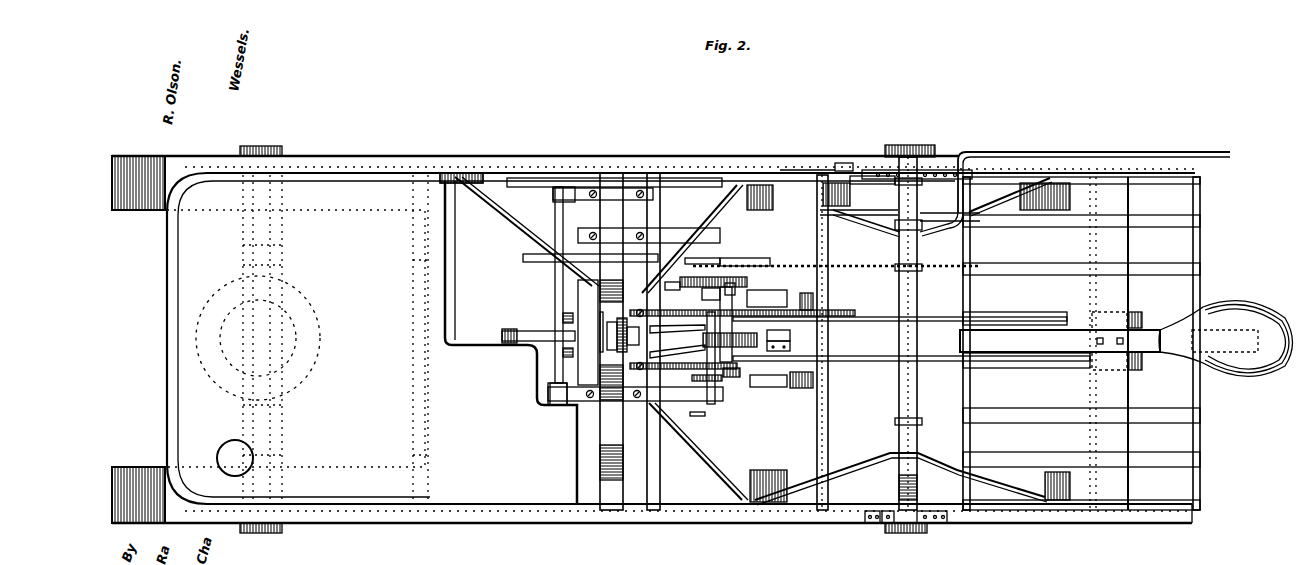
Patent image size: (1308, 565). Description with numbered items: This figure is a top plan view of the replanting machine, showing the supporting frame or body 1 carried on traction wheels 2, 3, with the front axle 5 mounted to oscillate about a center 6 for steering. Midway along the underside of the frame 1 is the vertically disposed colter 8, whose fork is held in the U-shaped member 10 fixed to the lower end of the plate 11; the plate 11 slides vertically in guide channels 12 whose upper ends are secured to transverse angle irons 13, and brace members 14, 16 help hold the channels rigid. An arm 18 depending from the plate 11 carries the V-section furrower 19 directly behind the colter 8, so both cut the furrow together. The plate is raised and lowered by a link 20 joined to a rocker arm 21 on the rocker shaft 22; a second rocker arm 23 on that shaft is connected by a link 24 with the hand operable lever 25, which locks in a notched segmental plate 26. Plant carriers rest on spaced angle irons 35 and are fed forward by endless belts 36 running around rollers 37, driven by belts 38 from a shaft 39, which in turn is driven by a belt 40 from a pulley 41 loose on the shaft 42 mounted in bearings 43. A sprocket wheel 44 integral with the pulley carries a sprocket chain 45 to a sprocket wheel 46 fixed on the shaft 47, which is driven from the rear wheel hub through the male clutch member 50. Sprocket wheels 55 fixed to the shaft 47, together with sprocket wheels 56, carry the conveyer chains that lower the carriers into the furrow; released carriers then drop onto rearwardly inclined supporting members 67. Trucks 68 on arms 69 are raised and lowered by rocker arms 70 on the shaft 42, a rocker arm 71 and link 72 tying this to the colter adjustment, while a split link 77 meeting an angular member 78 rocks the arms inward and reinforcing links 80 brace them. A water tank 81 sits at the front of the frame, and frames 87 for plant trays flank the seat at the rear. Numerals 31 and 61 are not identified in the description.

The supporting frame 1 is at (505, 165).
The traction wheel 2 is at (864, 165).
The traction wheel 3 is at (150, 170).
The front axle 5 is at (280, 252).
The center 6 is at (280, 355).
The colter 8 is at (498, 333).
The U-shaped member 10 is at (612, 345).
The plate 11 is at (605, 322).
The guide channels 12 is at (605, 326).
The angle irons 13 is at (585, 443).
The brace member 14 is at (495, 205).
The brace member 16 is at (600, 320).
The arm 18 is at (677, 321).
The furrower 19 is at (677, 354).
The link 20 is at (556, 358).
The rocker arm 21 is at (545, 333).
The rocker shaft 22 is at (548, 384).
The rocker arm 23 is at (530, 186).
The link 24 is at (548, 184).
The hand operable lever 25 is at (843, 168).
The notched segmental plate 26 is at (960, 165).
The rail 31 is at (1016, 147).
The angle irons 35 is at (742, 342).
The endless belts 36 is at (718, 340).
The rollers 37 is at (1050, 355).
The belts 38 is at (718, 418).
The shaft 39 is at (700, 416).
The belt 40 is at (735, 283).
The pulley 41 is at (680, 287).
The shaft 42 is at (872, 220).
The bearings 43 is at (635, 316).
The sprocket wheel 44 is at (660, 178).
The sprocket chain 45 is at (760, 263).
The sprocket wheel 46 is at (950, 239).
The shaft 47 is at (900, 228).
The male clutch member 50 is at (890, 208).
The sprocket wheels 55 is at (1228, 341).
The sprocket wheels 56 is at (712, 386).
The gear 61 is at (770, 342).
The supporting members 67 is at (1142, 312).
The trucks 68 is at (806, 300).
The arms 69 is at (776, 300).
The rocker arms 70 is at (740, 302).
The rocker arm 71 is at (722, 260).
The link 72 is at (555, 252).
The split link 77 is at (793, 335).
The angular member 78 is at (793, 347).
The reinforcing links 80 is at (829, 302).
The water tank 81 is at (301, 338).
The frame 87 is at (1153, 184).